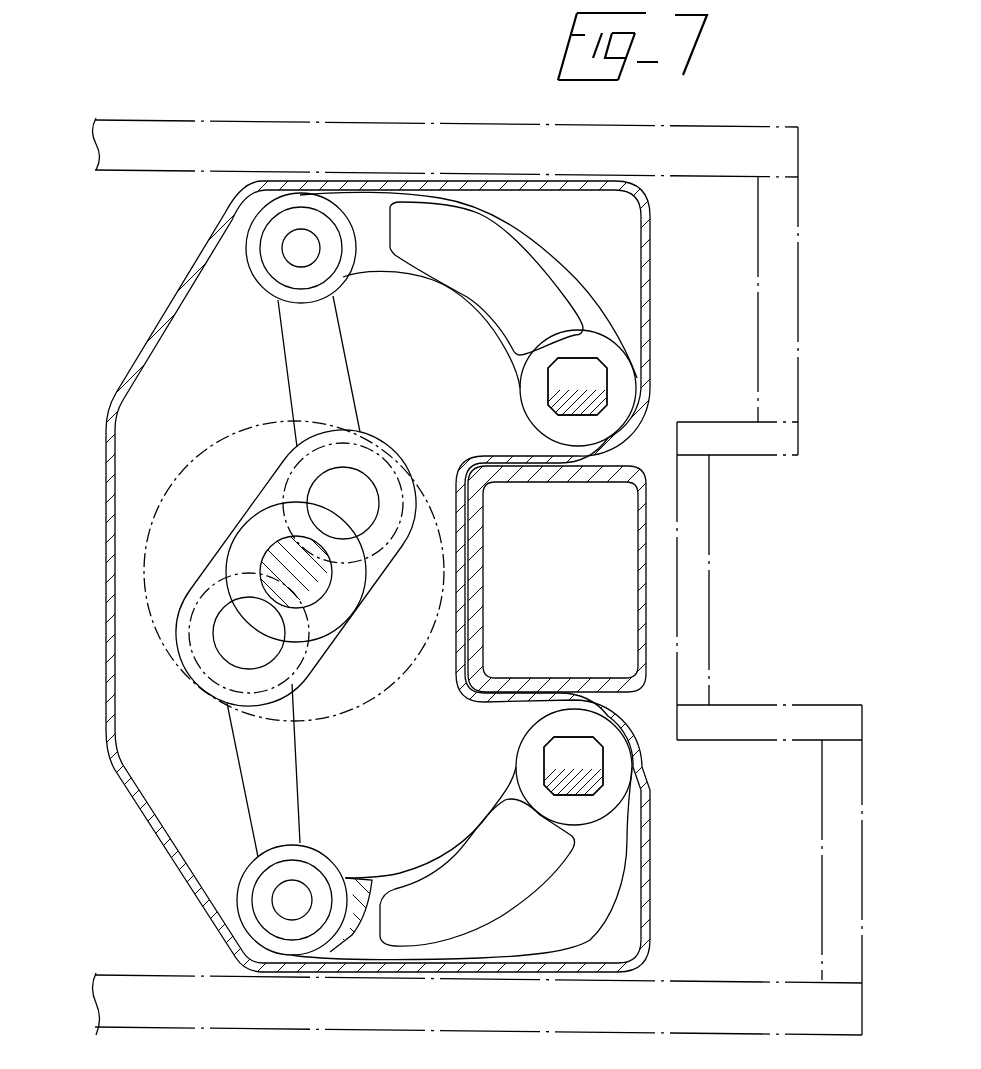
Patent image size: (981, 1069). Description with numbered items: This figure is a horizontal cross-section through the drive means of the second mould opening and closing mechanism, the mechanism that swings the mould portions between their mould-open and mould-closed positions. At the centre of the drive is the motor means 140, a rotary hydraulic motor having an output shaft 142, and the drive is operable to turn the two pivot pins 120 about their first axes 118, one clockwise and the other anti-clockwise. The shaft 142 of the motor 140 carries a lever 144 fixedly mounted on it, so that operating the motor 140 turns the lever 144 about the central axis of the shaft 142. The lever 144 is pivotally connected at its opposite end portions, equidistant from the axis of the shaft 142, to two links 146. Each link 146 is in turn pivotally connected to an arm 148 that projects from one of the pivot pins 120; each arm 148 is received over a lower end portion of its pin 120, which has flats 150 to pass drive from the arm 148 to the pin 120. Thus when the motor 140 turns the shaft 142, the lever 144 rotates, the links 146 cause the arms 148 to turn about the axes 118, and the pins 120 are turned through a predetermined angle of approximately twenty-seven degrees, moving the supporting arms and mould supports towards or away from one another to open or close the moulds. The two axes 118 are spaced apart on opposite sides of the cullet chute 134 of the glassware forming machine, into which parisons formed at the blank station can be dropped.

The first axis 118 is at (573, 385).
The pivot pin 120 is at (598, 385).
The cullet chute 134 is at (568, 480).
The motor means 140 is at (243, 425).
The output shaft 142 is at (268, 535).
The lever 144 is at (380, 575).
The link 146 is at (340, 360).
The arm 148 is at (375, 252).
The flats 150 is at (590, 350).